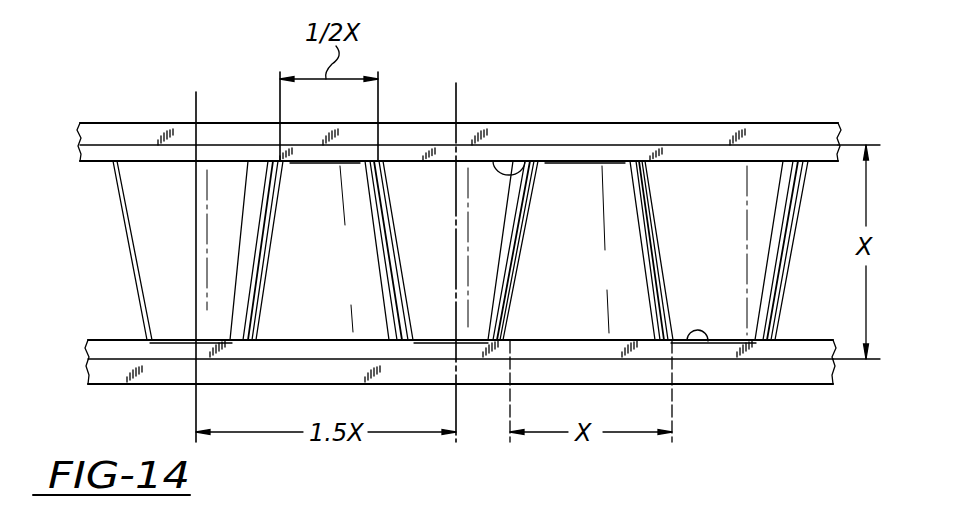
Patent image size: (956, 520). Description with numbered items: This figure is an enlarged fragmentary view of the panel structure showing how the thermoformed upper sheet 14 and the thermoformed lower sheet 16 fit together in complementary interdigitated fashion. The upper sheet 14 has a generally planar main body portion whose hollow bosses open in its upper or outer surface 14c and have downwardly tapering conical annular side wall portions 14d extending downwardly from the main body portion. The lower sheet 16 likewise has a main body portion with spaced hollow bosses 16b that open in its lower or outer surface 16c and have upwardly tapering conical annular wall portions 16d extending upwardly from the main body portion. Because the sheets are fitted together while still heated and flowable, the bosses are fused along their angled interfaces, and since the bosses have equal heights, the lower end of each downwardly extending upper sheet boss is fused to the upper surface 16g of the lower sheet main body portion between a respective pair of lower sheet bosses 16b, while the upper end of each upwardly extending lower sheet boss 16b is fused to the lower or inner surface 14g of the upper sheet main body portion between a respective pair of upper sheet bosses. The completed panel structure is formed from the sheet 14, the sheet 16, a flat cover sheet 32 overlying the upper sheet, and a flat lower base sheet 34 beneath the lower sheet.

The upper sheet 14 is at (434, 126).
The upper or outer surface of the main body portion 14c is at (150, 144).
The downwardly tapering conical annular side wall portions 14d is at (330, 279).
The lower or inner surface of upper sheet main body portion 14g is at (525, 161).
The lower sheet 16 is at (756, 378).
The lower or outer surface of the main body portion 16c is at (818, 385).
The upwardly tapering conical annular wall portions 16d is at (173, 224).
The hollow bosses of lower sheet 16b is at (440, 223).
The upper surface of lower sheet main body portion 16g is at (708, 341).
The flat cover sheet 32 is at (106, 118).
The flat lower base sheet 34 is at (484, 418).